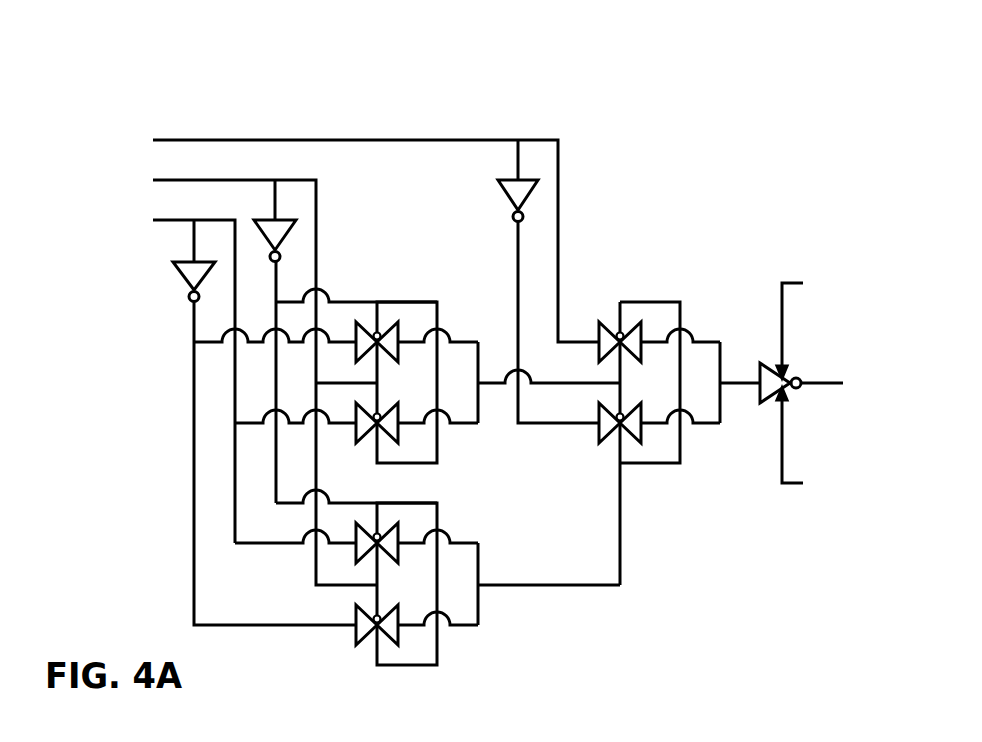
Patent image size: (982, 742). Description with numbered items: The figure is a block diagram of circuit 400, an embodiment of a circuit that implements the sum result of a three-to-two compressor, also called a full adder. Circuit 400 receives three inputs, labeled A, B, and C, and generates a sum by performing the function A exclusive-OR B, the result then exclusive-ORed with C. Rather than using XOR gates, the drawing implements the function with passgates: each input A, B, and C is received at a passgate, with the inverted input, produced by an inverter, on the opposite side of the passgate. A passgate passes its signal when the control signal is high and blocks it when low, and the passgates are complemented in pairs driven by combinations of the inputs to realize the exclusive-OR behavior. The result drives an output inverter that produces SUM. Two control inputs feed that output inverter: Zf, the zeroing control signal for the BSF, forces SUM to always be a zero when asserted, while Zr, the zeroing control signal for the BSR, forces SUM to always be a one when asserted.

The circuit 400 is at (172, 28).
The input A is at (240, 416).
The input B is at (280, 376).
The input C is at (361, 275).
The sum output SUM is at (784, 377).
The zeroing control signal for BSF Zf is at (805, 324).
The zeroing control signal for BSR Zr is at (806, 442).